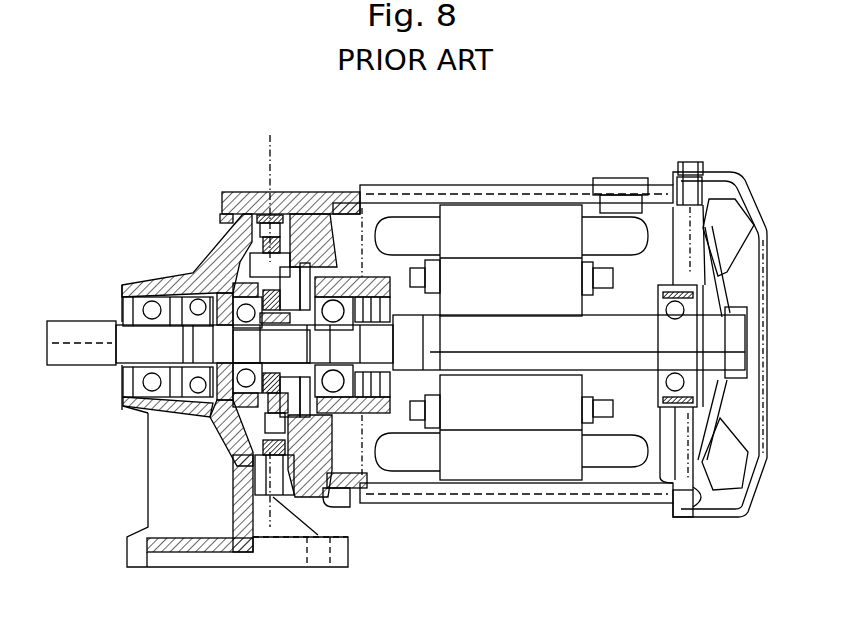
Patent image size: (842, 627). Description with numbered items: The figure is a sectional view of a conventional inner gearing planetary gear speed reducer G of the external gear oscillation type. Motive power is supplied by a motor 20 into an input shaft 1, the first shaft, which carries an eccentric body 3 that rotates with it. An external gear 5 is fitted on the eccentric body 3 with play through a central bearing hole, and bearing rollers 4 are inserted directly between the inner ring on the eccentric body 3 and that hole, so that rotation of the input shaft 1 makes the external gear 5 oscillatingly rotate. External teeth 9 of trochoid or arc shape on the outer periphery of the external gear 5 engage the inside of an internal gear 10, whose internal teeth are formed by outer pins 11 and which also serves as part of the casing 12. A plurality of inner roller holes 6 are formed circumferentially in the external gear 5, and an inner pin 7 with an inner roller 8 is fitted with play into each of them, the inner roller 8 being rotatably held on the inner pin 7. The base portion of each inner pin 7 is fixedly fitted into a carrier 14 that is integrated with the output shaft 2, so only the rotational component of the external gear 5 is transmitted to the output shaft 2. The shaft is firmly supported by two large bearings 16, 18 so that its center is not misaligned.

The input shaft 1 is at (334, 192).
The output shaft 2 is at (87, 342).
The eccentric body 3 is at (227, 282).
The bearing rollers 4 is at (303, 413).
The external gear 5 is at (230, 272).
The inner roller holes 6 is at (217, 407).
The inner pin 7 is at (233, 445).
The inner roller 8 is at (227, 420).
The external teeth 9 is at (269, 150).
The internal gear 10 is at (283, 193).
The outer pins 11 is at (310, 192).
The casing 12 is at (342, 192).
The carrier 14 is at (207, 272).
The large bearing 16 is at (120, 290).
The large bearing 18 is at (150, 287).
The motor 20 is at (545, 143).
The planetary gear speed reducer G is at (270, 575).